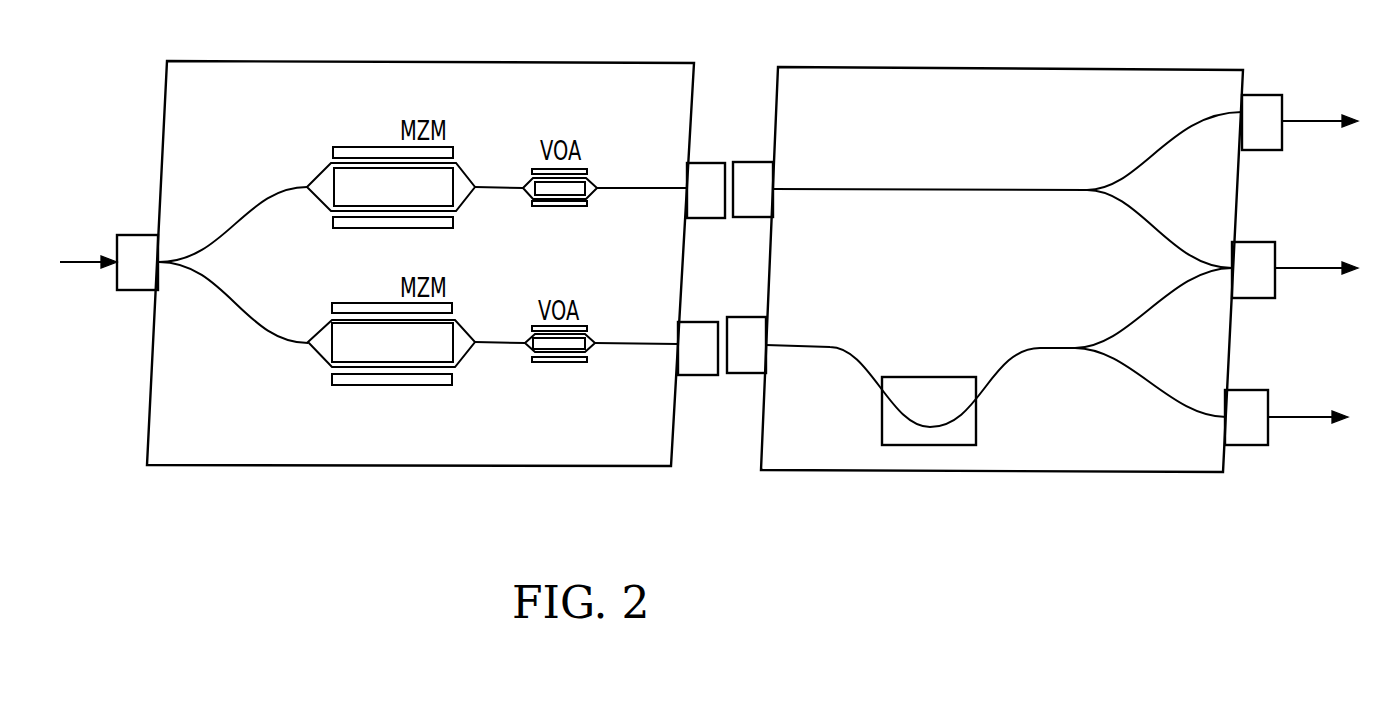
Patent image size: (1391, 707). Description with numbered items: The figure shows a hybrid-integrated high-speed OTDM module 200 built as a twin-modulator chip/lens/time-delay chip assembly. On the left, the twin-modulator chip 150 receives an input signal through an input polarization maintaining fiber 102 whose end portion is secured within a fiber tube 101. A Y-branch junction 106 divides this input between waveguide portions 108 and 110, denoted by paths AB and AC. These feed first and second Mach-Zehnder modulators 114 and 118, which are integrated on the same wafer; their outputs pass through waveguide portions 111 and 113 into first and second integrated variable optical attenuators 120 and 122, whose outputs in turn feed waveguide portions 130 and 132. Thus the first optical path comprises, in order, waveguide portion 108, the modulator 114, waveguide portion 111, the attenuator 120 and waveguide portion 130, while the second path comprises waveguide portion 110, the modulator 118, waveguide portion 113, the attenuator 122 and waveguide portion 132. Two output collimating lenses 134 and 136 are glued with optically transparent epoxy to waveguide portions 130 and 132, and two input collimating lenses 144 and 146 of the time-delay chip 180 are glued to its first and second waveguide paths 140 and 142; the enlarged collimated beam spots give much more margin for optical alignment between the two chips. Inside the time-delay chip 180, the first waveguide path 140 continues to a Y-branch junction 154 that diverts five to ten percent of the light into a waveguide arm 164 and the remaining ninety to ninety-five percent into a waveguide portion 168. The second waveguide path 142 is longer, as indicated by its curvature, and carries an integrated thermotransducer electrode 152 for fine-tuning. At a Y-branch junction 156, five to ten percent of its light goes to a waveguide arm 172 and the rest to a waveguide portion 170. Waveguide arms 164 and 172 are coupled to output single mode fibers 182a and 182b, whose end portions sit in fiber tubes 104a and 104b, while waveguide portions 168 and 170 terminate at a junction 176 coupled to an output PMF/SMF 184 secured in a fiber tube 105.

The fiber tube 101 is at (127, 233).
The input polarization maintaining fiber 102 is at (77, 266).
The fiber tube 104a is at (1255, 152).
The fiber tube 104b is at (1240, 447).
The fiber tube 105 is at (1250, 298).
The Y-branch junction 106 is at (161, 268).
The waveguide portion 108 is at (248, 217).
The waveguide portion 110 is at (250, 318).
The waveguide portion 111 is at (492, 190).
The waveguide portion 113 is at (490, 345).
The first Mach-Zehnder modulator 114 is at (345, 146).
The second Mach-Zehnder modulator 118 is at (345, 302).
The first integrated variable optical attenuator 120 is at (538, 207).
The second integrated variable optical attenuator 122 is at (535, 364).
The waveguide portion 130 is at (612, 187).
The waveguide portion 132 is at (615, 343).
The output collimating lens 134 is at (695, 378).
The output collimating lens 136 is at (695, 220).
The first waveguide path 140 is at (835, 188).
The second waveguide path 142 is at (835, 347).
The input collimating lens 144 is at (735, 315).
The input collimating lens 146 is at (740, 160).
The twin-modulator chip 150 is at (458, 62).
The thermotransducer 152 is at (950, 377).
The Y-branch junction 154 is at (1083, 190).
The Y-branch junction 156 is at (1069, 346).
The waveguide arm 164 is at (1160, 143).
The waveguide portion 168 is at (1150, 222).
The waveguide portion 170 is at (1128, 320).
The waveguide arm 172 is at (1115, 362).
The junction 176 is at (1200, 280).
The time-delay chip 180 is at (988, 67).
The output single mode fiber 182a is at (1308, 124).
The output single mode fiber 182b is at (1295, 420).
The output PMF/SMF 184 is at (1310, 271).
The optical transmitter system 200 is at (911, 510).